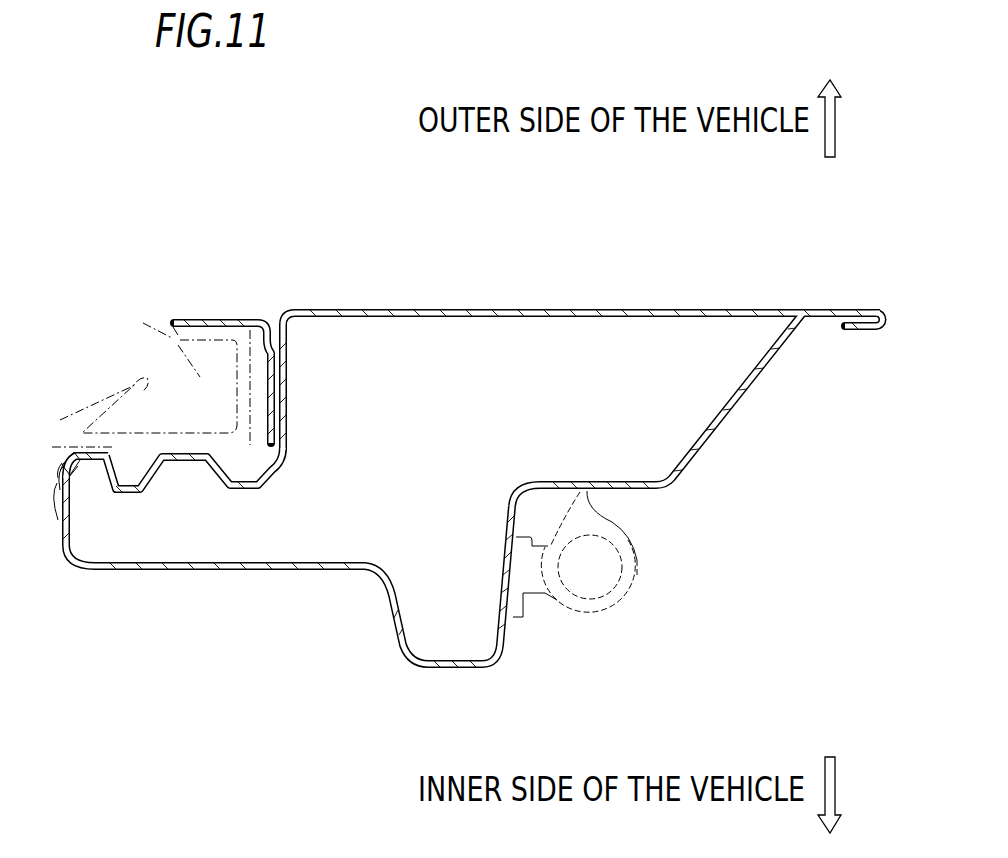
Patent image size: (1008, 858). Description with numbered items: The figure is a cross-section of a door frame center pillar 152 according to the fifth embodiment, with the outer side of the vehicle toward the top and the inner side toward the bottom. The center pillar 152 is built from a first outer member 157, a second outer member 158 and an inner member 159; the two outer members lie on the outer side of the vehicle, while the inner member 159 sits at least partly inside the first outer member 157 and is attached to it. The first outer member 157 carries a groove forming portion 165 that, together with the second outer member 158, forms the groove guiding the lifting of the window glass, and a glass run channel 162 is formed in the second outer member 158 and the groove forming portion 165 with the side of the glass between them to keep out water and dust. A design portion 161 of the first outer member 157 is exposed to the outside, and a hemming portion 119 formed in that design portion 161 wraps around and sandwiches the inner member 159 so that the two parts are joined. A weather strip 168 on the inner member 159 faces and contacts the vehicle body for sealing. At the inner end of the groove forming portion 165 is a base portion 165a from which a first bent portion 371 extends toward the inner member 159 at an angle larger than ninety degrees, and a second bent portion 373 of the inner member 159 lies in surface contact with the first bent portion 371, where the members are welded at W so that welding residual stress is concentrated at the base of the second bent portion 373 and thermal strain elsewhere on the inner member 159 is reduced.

The center pillar 152 is at (636, 216).
The first outer member 157 is at (706, 298).
The second outer member 158 is at (250, 306).
The inner member 159 is at (372, 598).
The design portion 161 is at (500, 310).
The glass run channel 162 is at (33, 460).
The groove forming portion 165 is at (283, 378).
The base portion 165a is at (99, 472).
The weather strip 168 is at (648, 561).
The hemming portion 119 is at (853, 310).
The first bent portion 371 is at (73, 470).
The second bent portion 373 is at (70, 505).
The weld portion W is at (58, 483).